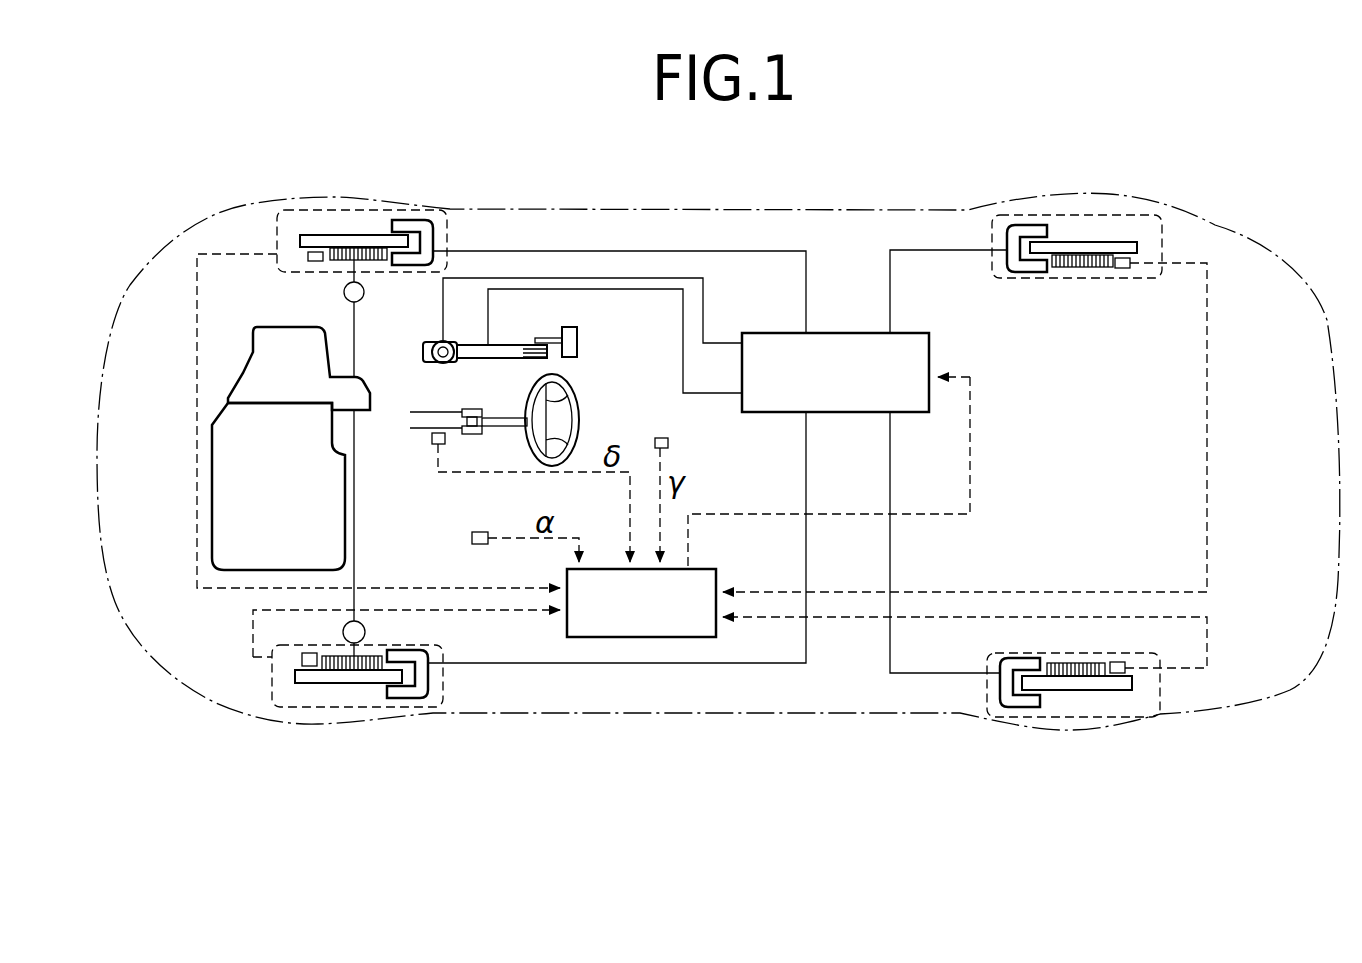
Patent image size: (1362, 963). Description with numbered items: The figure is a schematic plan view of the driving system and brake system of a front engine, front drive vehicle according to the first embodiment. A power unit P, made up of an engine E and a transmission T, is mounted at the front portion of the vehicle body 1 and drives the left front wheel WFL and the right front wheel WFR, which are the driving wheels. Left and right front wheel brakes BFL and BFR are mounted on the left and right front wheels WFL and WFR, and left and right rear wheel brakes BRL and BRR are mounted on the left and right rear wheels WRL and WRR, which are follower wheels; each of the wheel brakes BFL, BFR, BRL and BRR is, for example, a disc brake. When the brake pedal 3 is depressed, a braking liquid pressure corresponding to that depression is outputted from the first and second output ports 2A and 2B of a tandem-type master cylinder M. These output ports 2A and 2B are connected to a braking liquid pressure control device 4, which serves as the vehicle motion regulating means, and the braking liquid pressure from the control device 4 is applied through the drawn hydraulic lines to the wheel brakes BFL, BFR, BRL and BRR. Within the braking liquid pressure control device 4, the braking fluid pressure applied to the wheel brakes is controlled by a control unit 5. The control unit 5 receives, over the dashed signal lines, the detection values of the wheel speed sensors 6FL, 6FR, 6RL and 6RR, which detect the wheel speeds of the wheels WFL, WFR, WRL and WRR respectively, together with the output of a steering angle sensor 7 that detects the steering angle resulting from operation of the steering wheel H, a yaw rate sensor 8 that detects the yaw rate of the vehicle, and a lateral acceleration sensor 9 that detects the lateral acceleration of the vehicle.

The vehicle body 1 is at (716, 722).
The power unit P is at (340, 421).
The engine E is at (281, 513).
The transmission T is at (298, 377).
The right front wheel WFR is at (339, 228).
The left front wheel WFL is at (339, 731).
The right rear wheel WRR is at (1061, 239).
The left rear wheel WRL is at (1054, 754).
The right front wheel brake BFR is at (415, 218).
The left front wheel brake BFL is at (413, 702).
The right rear wheel brake BRR is at (1006, 222).
The left rear wheel brake BRL is at (1010, 708).
The wheel speed sensor 6FR is at (269, 286).
The wheel speed sensor 6FL is at (247, 701).
The wheel speed sensor 6RR is at (1109, 308).
The wheel speed sensor 6RL is at (1117, 675).
The first output port 2A is at (488, 342).
The second output port 2B is at (442, 340).
The master cylinder M is at (485, 359).
The brake pedal 3 is at (577, 340).
The braking liquid pressure control device 4 is at (848, 390).
The control unit 5 is at (645, 622).
The steering wheel H is at (566, 418).
The steering angle sensor 7 is at (431, 438).
The yaw rate sensor 8 is at (668, 443).
The lateral acceleration sensor 9 is at (471, 538).